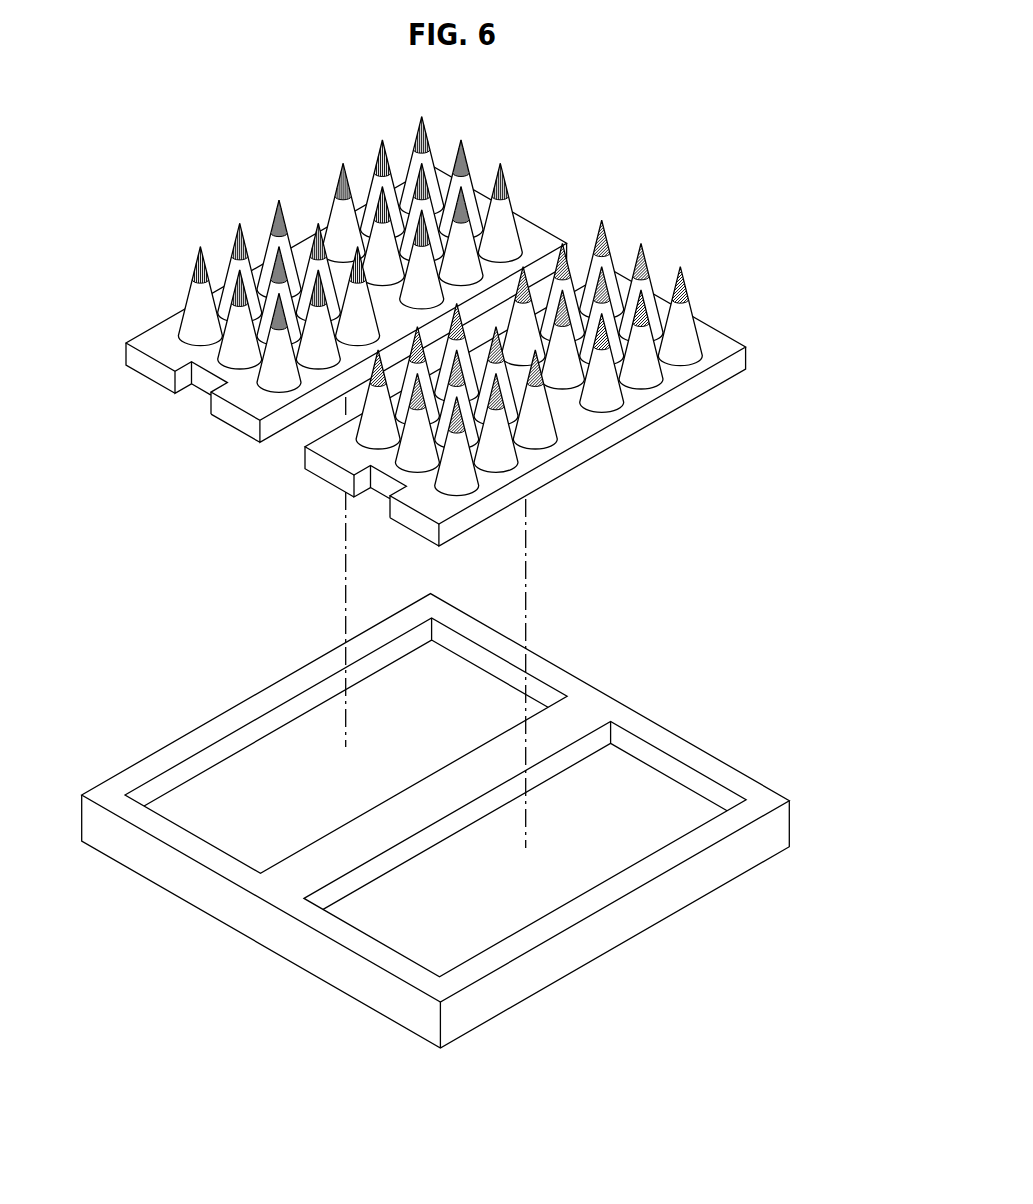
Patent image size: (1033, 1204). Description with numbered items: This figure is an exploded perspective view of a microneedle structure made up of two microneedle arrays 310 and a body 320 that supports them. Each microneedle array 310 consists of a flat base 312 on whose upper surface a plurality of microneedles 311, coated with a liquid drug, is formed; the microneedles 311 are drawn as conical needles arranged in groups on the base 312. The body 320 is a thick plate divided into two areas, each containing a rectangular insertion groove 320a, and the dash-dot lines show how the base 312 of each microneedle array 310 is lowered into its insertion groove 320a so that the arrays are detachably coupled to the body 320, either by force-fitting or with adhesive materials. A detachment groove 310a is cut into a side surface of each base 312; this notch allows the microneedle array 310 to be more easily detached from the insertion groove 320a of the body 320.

The microneedle array 310 is at (421, 330).
The microneedle 311 is at (503, 180).
The base 312 is at (530, 232).
The detachment groove 310a is at (199, 397).
The body 320 is at (620, 928).
The insertion groove 320a is at (642, 796).